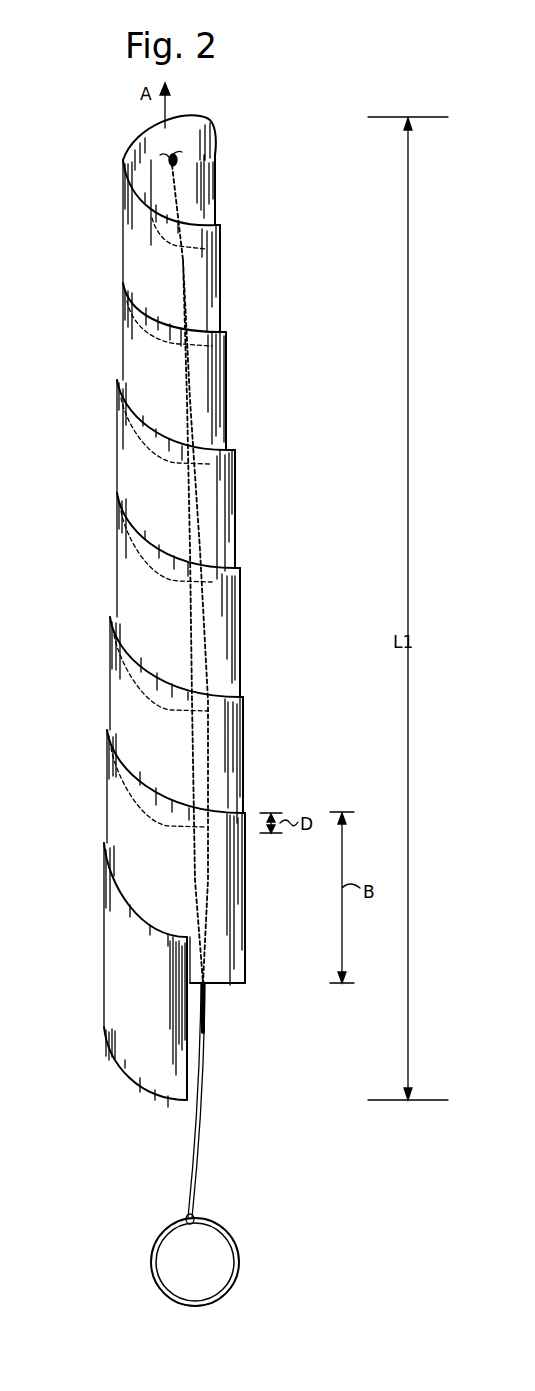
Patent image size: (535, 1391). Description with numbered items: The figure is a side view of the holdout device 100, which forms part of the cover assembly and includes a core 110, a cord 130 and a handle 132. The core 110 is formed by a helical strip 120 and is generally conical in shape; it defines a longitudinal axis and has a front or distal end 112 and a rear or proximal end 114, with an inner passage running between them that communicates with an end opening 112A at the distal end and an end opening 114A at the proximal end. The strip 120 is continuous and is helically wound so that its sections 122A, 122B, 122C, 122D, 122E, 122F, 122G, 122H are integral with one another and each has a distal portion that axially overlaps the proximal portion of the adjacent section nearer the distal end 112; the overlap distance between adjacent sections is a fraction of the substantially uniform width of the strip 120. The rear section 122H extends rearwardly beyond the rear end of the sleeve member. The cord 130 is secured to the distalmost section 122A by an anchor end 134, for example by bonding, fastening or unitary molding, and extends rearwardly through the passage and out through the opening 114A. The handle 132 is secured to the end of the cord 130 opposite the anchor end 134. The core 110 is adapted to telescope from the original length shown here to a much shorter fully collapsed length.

The holdout device 100 is at (280, 155).
The core 110 is at (106, 488).
The front or distal end 112 is at (197, 117).
The end opening 112A is at (131, 127).
The rear or proximal end 114 is at (138, 1088).
The end opening 114A is at (223, 997).
The helical strip 120 is at (98, 793).
The distalmost section 122A is at (190, 195).
The section 122B is at (205, 317).
The section 122C is at (213, 412).
The section 122D is at (223, 521).
The section 122E is at (228, 641).
The section 122F is at (233, 766).
The section 122G is at (230, 895).
The rear section 122H is at (127, 993).
The cord 130 is at (203, 1128).
The handle 132 is at (170, 1222).
The anchor end 134 is at (175, 153).